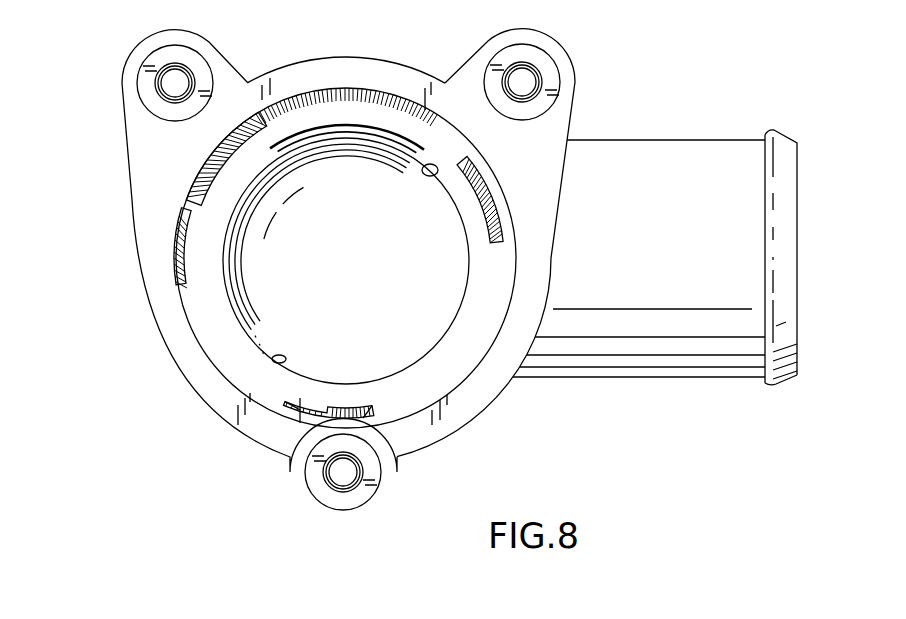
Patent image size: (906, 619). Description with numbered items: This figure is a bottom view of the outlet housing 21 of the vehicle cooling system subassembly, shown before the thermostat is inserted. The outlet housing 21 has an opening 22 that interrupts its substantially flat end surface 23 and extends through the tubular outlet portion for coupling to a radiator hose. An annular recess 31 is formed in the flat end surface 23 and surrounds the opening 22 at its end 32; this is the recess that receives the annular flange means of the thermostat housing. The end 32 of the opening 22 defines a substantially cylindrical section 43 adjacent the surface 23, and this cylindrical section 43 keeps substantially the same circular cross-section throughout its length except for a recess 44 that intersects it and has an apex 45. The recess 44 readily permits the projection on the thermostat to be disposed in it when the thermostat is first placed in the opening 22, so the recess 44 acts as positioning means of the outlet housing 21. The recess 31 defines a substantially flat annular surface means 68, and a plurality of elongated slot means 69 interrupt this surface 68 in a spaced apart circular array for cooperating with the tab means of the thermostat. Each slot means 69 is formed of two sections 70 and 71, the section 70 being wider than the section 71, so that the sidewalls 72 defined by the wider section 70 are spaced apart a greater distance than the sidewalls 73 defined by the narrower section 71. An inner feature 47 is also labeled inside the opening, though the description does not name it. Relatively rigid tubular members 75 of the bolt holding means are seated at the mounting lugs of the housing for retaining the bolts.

The outlet housing 21 is at (620, 140).
The opening 22 is at (278, 358).
The flat end surface 23 is at (157, 310).
The annular recess 31 is at (205, 253).
The end 32 is at (452, 277).
The cylindrical section 43 is at (437, 165).
The recess 44 is at (361, 128).
The apex 45 is at (347, 124).
The inner thread 47 is at (323, 153).
The annular surface means 68 is at (222, 338).
The elongated slot means 69 is at (492, 181).
The wider section 70 is at (363, 418).
The narrower section 71 is at (300, 423).
The sidewalls 72 is at (360, 402).
The sidewalls 73 is at (300, 398).
The tubular member 75 is at (538, 60).